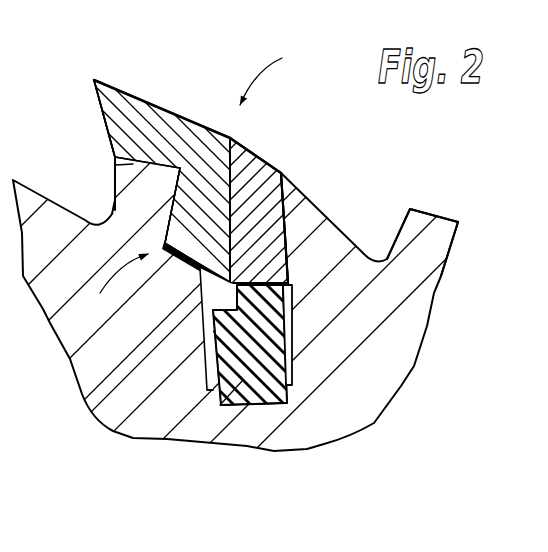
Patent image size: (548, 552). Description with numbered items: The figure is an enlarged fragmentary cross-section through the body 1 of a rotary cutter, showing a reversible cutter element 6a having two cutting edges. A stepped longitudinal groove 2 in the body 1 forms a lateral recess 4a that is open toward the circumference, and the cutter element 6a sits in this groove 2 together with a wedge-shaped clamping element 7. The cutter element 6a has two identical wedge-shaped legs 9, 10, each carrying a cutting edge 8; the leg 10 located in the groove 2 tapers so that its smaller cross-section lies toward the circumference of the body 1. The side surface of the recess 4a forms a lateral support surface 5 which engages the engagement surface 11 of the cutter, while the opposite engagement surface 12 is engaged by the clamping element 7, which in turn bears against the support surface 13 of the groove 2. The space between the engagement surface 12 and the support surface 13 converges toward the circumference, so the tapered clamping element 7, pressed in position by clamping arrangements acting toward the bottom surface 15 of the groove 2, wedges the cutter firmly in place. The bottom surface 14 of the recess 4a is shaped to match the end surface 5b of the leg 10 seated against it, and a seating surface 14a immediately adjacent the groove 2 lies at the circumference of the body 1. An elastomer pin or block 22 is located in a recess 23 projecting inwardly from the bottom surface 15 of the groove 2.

The body 1 is at (307, 440).
The groove 2 is at (294, 343).
The recess 4a is at (116, 289).
The lateral support surface 5 is at (171, 195).
The end surface 5b is at (200, 311).
The cutter element 6a is at (283, 74).
The clamping element 7 is at (258, 206).
The cutting edge 8 is at (94, 80).
The leg 9 is at (152, 130).
The leg 10 is at (282, 180).
The engagement surface 11 is at (170, 222).
The engagement surface 12 is at (245, 165).
The support surface 13 is at (422, 227).
The bottom surface 14 is at (188, 262).
The seating surface 14a is at (110, 168).
The bottom surface 15 is at (300, 397).
The elastomer pin 22 is at (220, 405).
The recess 23 is at (268, 403).